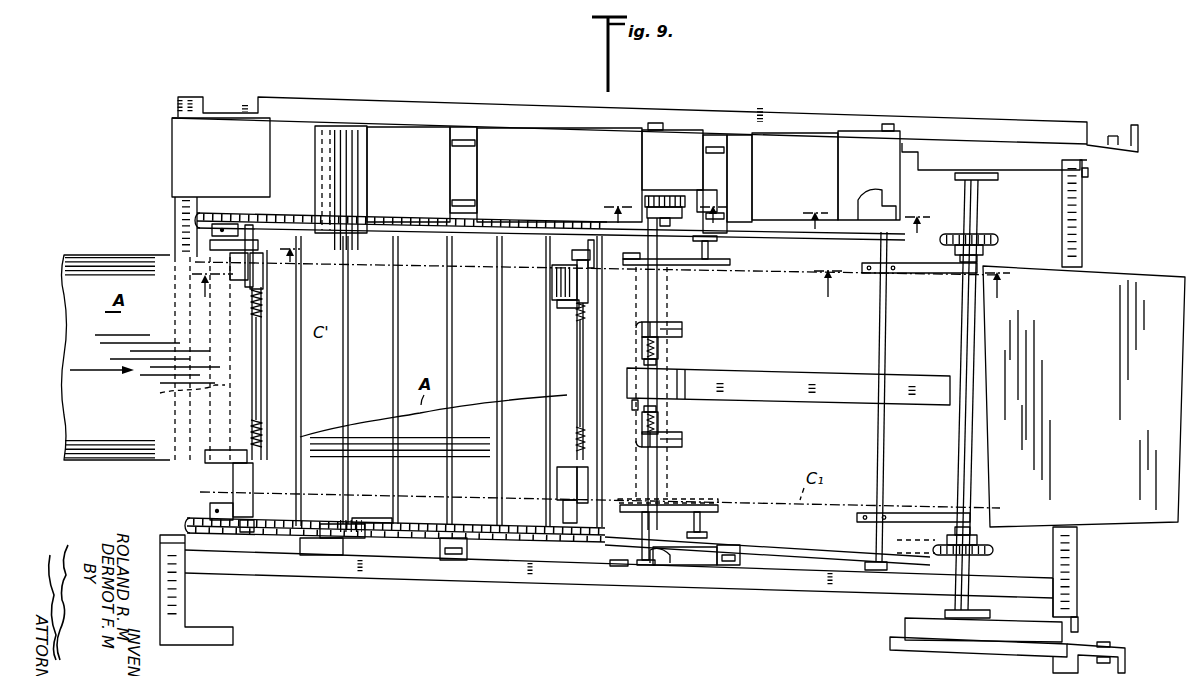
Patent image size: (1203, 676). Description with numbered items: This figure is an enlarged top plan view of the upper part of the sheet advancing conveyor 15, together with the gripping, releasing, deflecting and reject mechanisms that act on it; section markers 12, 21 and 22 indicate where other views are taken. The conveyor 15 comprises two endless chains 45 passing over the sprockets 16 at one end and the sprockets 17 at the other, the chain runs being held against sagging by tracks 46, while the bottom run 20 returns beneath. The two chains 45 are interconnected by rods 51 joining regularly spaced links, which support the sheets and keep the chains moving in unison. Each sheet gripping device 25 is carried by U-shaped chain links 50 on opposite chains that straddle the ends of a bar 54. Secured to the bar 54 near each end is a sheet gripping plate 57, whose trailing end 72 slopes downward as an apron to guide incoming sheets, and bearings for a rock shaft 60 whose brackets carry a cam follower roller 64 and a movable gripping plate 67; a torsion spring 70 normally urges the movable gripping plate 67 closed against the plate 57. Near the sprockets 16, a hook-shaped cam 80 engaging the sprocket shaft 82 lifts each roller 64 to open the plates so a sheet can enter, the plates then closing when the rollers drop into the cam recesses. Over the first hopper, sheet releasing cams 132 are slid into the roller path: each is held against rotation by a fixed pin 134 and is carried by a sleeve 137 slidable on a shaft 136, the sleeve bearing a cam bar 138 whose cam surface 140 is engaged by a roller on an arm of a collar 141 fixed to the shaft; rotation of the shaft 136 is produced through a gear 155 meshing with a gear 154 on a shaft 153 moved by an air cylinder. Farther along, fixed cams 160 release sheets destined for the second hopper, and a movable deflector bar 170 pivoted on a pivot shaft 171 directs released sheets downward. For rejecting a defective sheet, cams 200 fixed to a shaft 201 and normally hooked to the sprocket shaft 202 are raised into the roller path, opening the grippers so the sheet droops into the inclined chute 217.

The section line 12 is at (246, 282).
The sheet advancing conveyor 15 is at (498, 215).
The sprockets 16 is at (232, 240).
The sprockets 17 is at (992, 238).
The bottom run 20 is at (665, 207).
The section line 21 is at (913, 285).
The section line 22 is at (866, 214).
The sheet gripping device 25 is at (264, 418).
The endless chains 45 is at (408, 223).
The track 46 is at (811, 237).
The chain links 50 is at (245, 533).
The rods 51 is at (396, 354).
The bar 54 is at (256, 364).
The sheet gripping plate 57 is at (560, 305).
The rock shaft 60 is at (259, 355).
The cam follower roller 64 is at (263, 247).
The movable gripping plate 67 is at (212, 458).
The torsion spring 70 is at (257, 303).
The trailing end 72 is at (556, 284).
The cam 80 is at (222, 224).
The shaft 82 is at (180, 392).
The sheet releasing cam 132 is at (690, 276).
The fixed pin 134 is at (709, 250).
The shaft 136 is at (670, 568).
The sleeve 137 is at (650, 291).
The cam bar 138 is at (672, 323).
The cam surface 140 is at (683, 332).
The collar 141 is at (660, 352).
The shaft 153 is at (700, 190).
The gear 154 is at (673, 195).
The gear 155 is at (650, 194).
The fixed cam 160 is at (385, 250).
The movable deflector bar 170 is at (748, 377).
The pivot shaft 171 is at (636, 358).
The cams 200 is at (925, 274).
The shaft 201 is at (878, 333).
The shaft 202 is at (975, 363).
The inclined chute 217 is at (1068, 407).